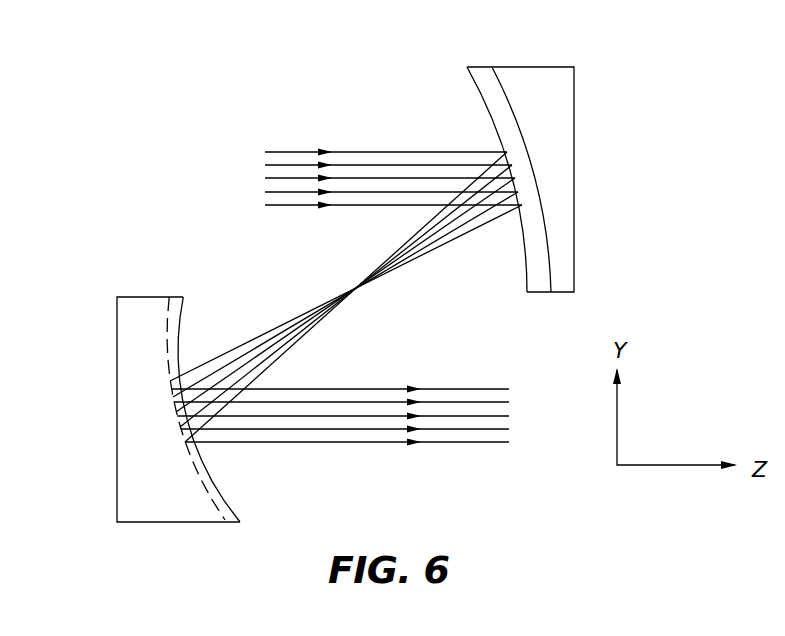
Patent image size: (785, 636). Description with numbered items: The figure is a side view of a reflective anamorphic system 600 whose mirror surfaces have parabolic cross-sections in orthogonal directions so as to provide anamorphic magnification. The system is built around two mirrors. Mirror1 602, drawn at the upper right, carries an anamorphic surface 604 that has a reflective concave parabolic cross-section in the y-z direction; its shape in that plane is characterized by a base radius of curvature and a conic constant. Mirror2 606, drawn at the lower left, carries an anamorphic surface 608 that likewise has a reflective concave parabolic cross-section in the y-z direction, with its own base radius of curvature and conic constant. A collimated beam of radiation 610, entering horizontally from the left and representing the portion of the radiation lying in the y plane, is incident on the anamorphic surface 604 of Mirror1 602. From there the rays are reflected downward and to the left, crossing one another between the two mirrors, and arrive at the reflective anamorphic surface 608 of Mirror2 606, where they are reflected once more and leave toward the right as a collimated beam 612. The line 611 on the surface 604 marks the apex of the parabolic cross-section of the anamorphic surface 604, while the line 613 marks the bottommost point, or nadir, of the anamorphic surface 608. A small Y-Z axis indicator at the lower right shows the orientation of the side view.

The reflective anamorphic system 600 is at (273, 58).
The Mirror1 602 is at (574, 108).
The anamorphic surface 604 is at (488, 90).
The Mirror2 606 is at (182, 297).
The anamorphic surface 608 is at (181, 332).
The collimated beam of radiation 610 is at (253, 197).
The line 611 is at (503, 131).
The collimated beam 612 is at (568, 428).
The line 613 is at (179, 361).